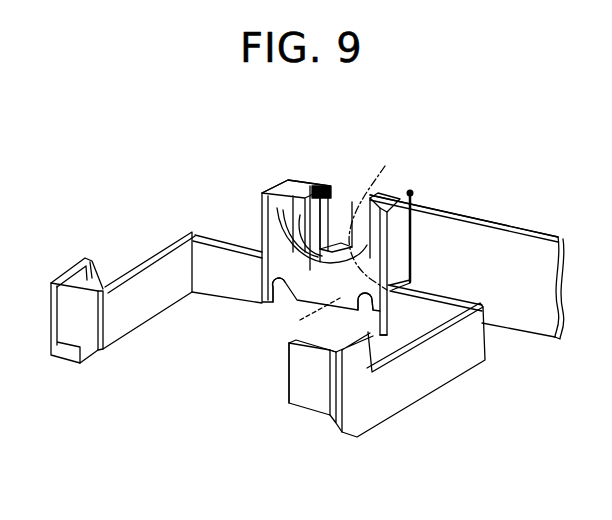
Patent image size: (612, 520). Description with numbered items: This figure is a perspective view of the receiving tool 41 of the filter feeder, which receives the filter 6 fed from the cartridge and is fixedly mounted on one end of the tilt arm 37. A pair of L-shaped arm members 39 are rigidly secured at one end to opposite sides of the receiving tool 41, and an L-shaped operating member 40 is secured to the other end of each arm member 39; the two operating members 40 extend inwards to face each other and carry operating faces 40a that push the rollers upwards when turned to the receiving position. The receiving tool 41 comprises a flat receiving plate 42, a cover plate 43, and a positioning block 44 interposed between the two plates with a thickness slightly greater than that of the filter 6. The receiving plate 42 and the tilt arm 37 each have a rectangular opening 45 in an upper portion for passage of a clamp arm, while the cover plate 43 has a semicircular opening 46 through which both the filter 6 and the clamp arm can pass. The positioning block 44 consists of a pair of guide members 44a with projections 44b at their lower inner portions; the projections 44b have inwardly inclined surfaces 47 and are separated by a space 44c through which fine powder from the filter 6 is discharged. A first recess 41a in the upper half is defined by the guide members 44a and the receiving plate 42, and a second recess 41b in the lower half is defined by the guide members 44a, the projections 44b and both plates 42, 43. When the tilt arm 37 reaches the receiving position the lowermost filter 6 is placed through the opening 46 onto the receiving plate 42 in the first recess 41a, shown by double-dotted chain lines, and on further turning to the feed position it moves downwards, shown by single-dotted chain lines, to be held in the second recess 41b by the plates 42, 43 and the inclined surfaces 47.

The filter 6 is at (375, 214).
The tilt arm 37 is at (537, 322).
The arm member 39 is at (150, 303).
The operating member 40 is at (80, 363).
The operating face 40a is at (290, 398).
The receiving tool 41 is at (412, 193).
The first recess 41a is at (320, 186).
The second recess 41b is at (435, 307).
The receiving plate 42 is at (446, 211).
The cover plate 43 is at (396, 269).
The positioning block 44 is at (398, 250).
The guide member 44a is at (278, 194).
The projection 44b is at (290, 303).
The space 44c is at (300, 320).
The rectangular opening 45 is at (345, 196).
The semicircular opening 46 is at (270, 213).
The inclined surface 47 is at (300, 277).